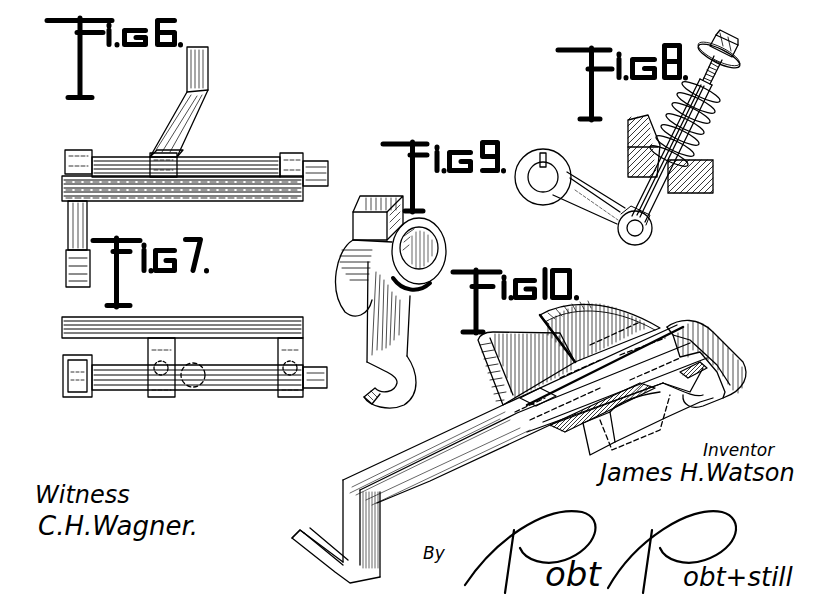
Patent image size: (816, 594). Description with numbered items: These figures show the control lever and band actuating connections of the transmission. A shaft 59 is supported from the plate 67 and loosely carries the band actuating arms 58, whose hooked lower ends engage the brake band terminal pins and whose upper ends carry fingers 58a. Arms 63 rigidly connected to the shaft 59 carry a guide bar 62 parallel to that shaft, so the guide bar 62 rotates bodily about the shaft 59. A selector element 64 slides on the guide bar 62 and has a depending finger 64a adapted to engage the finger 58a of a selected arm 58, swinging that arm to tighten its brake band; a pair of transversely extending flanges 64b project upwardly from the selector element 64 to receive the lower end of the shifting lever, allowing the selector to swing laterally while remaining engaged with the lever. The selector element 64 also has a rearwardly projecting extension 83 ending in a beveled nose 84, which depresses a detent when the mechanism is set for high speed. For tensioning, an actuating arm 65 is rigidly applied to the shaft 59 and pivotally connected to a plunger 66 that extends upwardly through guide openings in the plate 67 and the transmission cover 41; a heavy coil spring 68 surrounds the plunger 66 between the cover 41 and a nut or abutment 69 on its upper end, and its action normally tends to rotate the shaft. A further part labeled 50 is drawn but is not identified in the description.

In FIG. 8, the transmission cover 41 is at (650, 128).
In FIG. 6, the lever arm 50 is at (182, 118).
In FIG. 7, the lever arm 50 is at (191, 390).
In FIG. 9, the arms 58 is at (395, 340).
In FIG. 9, the fingers 58a is at (368, 215).
In FIG. 6, the shaft 59 is at (232, 160).
In FIG. 7, the shaft 59 is at (249, 380).
In FIG. 8, the shaft 59 is at (540, 186).
In FIG. 6, the guide bar 62 is at (254, 190).
In FIG. 7, the guide bar 62 is at (261, 310).
In FIG. 6, the arms 63 is at (292, 158).
In FIG. 7, the arms 63 is at (178, 345).
In FIG. 10, the selector element 64 is at (605, 426).
In FIG. 10, the depending finger 64a is at (700, 403).
In FIG. 10, the transversely extending flanges 64b is at (497, 336).
In FIG. 6, the actuating arm 65 is at (75, 226).
In FIG. 7, the actuating arm 65 is at (78, 385).
In FIG. 8, the actuating arm 65 is at (598, 212).
In FIG. 8, the plunger 66 is at (683, 143).
In FIG. 8, the plate 67 is at (672, 195).
In FIG. 8, the heavy coil spring 68 is at (722, 112).
In FIG. 8, the nut or abutment 69 is at (740, 53).
In FIG. 10, the rearwardly projecting extension 83 is at (460, 453).
In FIG. 10, the beveled nose 84 is at (313, 568).